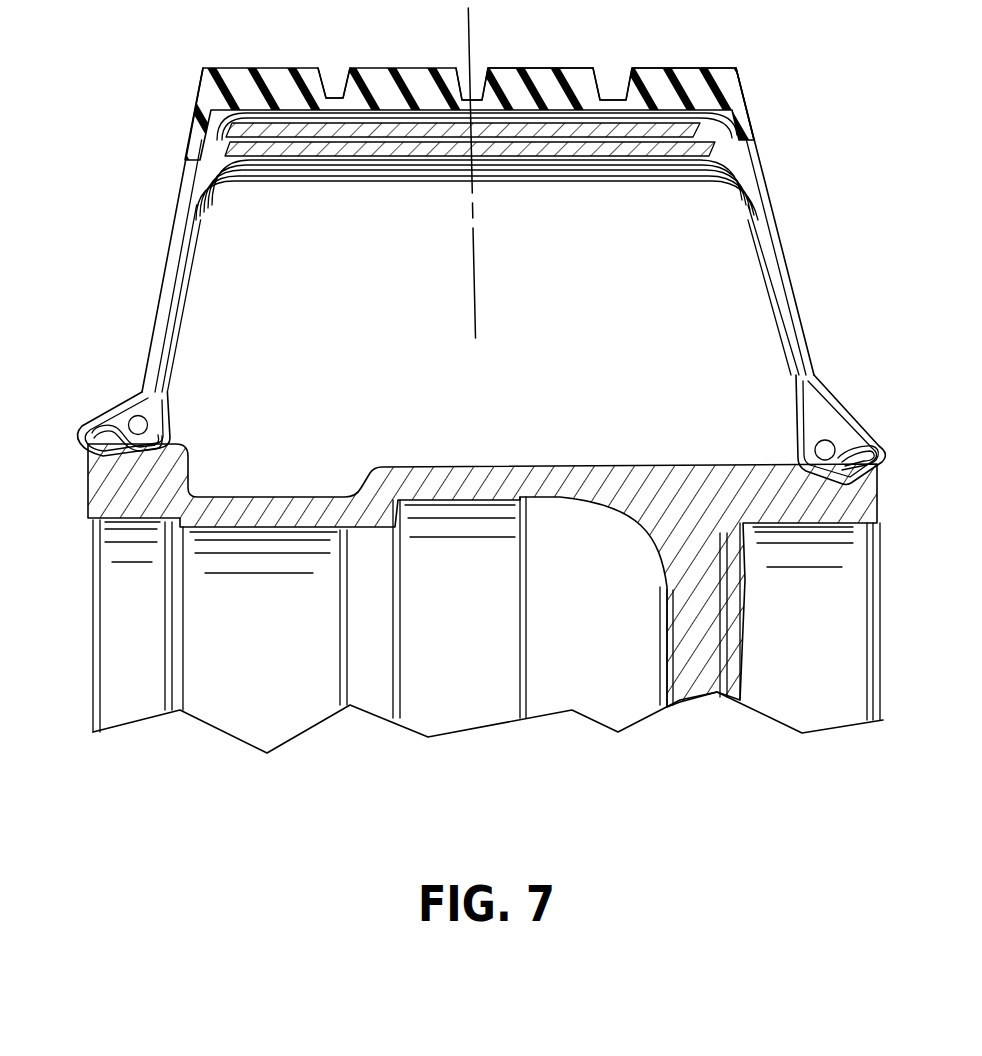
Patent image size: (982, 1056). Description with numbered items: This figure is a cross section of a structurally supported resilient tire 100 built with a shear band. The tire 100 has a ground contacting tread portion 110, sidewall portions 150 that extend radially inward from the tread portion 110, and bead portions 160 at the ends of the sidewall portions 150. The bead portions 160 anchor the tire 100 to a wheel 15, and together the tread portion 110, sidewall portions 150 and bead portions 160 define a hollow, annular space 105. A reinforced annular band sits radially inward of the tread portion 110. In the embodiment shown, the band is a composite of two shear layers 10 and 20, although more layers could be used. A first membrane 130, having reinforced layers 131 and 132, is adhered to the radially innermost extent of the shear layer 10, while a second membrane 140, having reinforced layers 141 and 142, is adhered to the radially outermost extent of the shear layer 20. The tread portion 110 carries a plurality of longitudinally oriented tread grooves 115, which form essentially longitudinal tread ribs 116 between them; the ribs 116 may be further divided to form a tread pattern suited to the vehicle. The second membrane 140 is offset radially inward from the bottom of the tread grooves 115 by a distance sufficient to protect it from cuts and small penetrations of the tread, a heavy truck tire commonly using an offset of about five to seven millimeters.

The tire 100 is at (169, 111).
The tread portion 110 is at (263, 60).
The tread grooves 115 is at (466, 88).
The tread ribs 116 is at (518, 66).
The second membrane 140 is at (645, 88).
The reinforced layer 142 is at (732, 84).
The reinforced layer 141 is at (730, 123).
The reinforced layer 132 is at (700, 153).
The reinforced layer 131 is at (675, 160).
The first membrane 130 is at (547, 184).
The shear layer 20 is at (440, 130).
The shear layer 10 is at (247, 147).
The sidewall portions 150 is at (154, 263).
The bead portions 160 is at (117, 389).
The annular space 105 is at (355, 363).
The wheel 15 is at (655, 452).